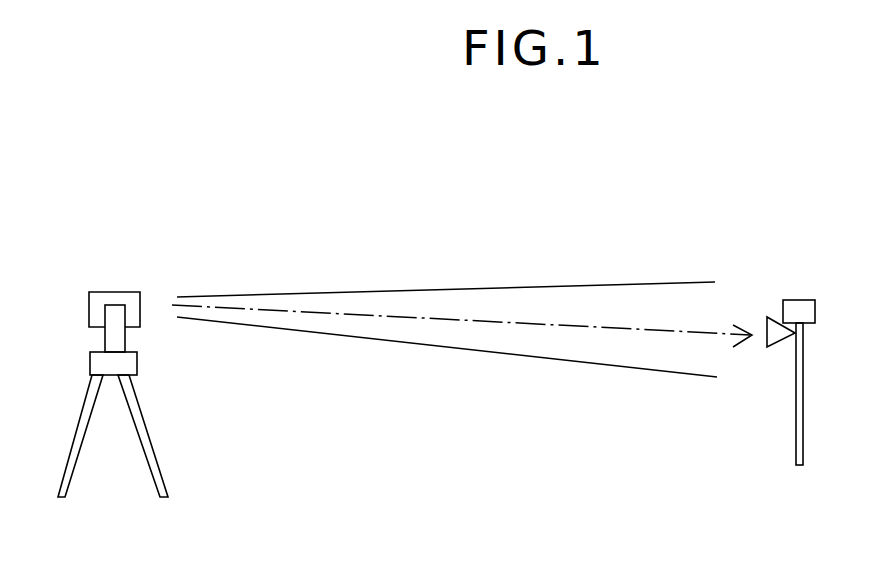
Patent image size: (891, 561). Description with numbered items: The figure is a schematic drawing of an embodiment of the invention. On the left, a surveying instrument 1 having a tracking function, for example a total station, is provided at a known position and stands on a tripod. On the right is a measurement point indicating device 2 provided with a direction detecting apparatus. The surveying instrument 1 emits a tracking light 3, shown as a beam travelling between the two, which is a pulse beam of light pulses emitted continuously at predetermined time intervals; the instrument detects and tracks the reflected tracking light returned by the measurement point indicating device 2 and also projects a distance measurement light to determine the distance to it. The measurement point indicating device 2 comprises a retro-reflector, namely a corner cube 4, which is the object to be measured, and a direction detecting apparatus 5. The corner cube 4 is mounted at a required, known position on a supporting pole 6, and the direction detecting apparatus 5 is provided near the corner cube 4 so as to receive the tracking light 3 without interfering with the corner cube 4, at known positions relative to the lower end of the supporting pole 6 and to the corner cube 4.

The surveying instrument 1 is at (112, 292).
The measurement point indicating device 2 is at (787, 288).
The tracking light 3 is at (420, 317).
The corner cube 4 is at (790, 343).
The direction detecting apparatus 5 is at (815, 313).
The supporting pole 6 is at (796, 386).